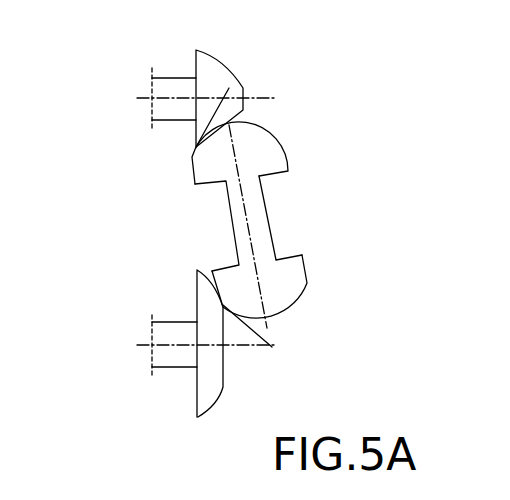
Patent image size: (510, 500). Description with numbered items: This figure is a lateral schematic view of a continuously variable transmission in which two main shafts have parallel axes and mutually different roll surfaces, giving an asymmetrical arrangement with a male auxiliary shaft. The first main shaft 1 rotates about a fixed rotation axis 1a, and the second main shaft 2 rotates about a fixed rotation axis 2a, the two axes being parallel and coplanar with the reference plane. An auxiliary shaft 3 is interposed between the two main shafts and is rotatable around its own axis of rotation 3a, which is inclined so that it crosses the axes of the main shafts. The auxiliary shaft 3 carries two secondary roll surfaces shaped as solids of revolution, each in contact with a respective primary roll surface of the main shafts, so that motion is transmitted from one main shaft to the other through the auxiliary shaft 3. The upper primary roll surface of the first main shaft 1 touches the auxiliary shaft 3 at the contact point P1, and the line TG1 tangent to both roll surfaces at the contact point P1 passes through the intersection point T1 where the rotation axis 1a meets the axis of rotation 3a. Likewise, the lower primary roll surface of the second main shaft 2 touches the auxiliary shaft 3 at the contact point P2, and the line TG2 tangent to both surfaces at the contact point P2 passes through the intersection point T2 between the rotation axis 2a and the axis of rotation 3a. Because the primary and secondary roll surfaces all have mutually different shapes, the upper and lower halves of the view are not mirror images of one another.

The first main shaft 1 is at (194, 91).
The rotation axis of the first main shaft 1a is at (165, 105).
The tangent line TG1 is at (212, 118).
The intersection point T1 is at (230, 85).
The second main shaft 2 is at (189, 341).
The rotation axis of the second main shaft 2a is at (178, 347).
The tangent line TG2 is at (248, 328).
The intersection point T2 is at (272, 350).
The auxiliary shaft 3 is at (253, 225).
The axis of rotation of the auxiliary shaft 3a is at (242, 198).
The contact point P1 is at (203, 152).
The contact point P2 is at (225, 306).